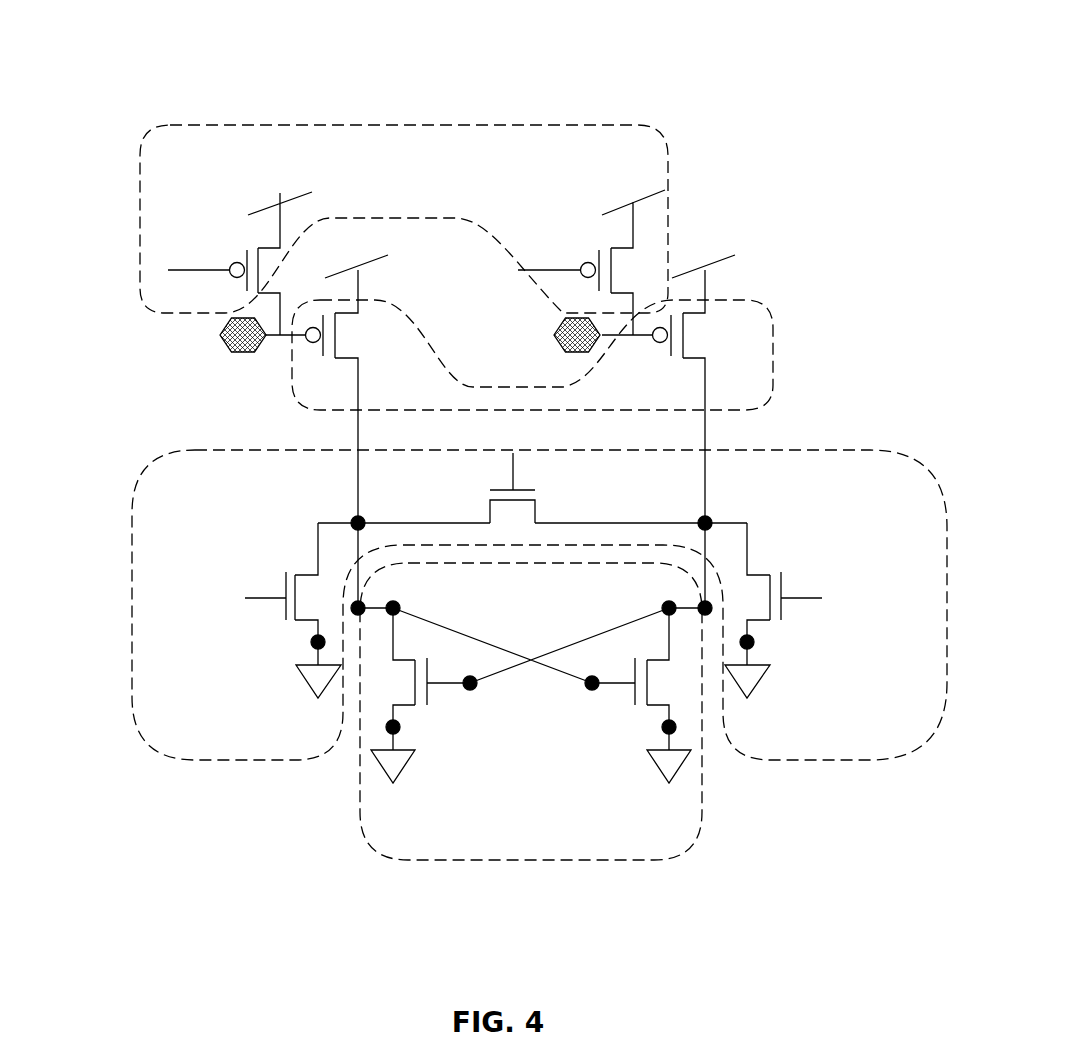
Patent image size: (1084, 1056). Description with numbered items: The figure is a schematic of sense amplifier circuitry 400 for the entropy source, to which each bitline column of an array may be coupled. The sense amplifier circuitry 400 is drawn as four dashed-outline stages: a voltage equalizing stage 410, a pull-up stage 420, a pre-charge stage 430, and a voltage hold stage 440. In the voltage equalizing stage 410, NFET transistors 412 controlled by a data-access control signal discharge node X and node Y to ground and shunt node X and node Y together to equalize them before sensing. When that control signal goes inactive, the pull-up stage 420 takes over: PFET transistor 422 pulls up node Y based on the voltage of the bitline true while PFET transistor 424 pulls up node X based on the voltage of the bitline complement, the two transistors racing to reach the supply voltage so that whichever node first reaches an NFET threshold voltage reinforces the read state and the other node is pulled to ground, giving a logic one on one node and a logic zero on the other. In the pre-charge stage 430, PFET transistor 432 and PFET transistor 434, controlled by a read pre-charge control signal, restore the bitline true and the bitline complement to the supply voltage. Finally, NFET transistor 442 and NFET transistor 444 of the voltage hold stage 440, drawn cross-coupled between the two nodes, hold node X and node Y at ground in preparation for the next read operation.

The sense amplifier circuitry 400 is at (500, 483).
The voltage equalizing stage 410 is at (136, 713).
The NFET transistors 412 is at (513, 510).
The pull-up stage 420 is at (777, 353).
The PFET transistor 422 is at (695, 335).
The PFET transistor 424 is at (340, 347).
The pre-charge stage 430 is at (670, 175).
The PFET transistor 432 is at (620, 267).
The PFET transistor 434 is at (245, 292).
The voltage hold stage 440 is at (537, 860).
The NFET transistor 442 is at (657, 683).
The NFET transistor 444 is at (407, 683).